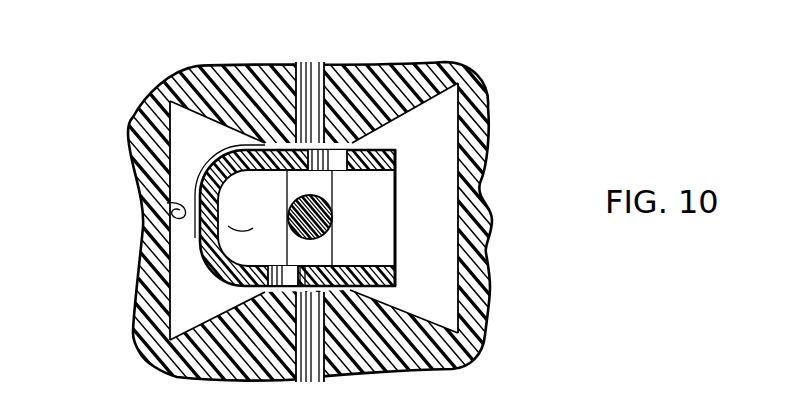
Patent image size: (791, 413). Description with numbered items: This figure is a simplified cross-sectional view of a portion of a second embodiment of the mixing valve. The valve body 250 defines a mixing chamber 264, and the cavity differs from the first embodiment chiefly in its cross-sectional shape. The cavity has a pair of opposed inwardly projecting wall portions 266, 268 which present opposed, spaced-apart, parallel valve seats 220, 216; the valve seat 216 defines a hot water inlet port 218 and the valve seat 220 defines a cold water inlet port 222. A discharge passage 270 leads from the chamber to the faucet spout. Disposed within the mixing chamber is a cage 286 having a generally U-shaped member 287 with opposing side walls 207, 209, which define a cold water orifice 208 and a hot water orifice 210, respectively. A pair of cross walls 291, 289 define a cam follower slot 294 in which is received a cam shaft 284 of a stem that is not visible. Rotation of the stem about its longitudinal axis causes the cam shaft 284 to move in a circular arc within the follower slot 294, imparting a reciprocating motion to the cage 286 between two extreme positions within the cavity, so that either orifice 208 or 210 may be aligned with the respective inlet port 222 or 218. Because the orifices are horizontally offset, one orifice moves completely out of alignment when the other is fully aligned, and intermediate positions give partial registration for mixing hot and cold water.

The valve body 250 is at (405, 60).
The mixing chamber 264 is at (452, 114).
The inwardly projecting wall portion 266 is at (372, 124).
The inwardly projecting wall portion 268 is at (398, 318).
The cold water inlet port 222 is at (294, 118).
The hot water inlet port 218 is at (294, 314).
The U-shaped member 287 is at (195, 172).
The valve seat 220 is at (263, 145).
The cold water orifice 208 is at (322, 170).
The hot water orifice 210 is at (310, 270).
The side wall 207 is at (380, 160).
The side wall 209 is at (380, 292).
The valve seat 216 is at (263, 288).
The cam follower slot 294 is at (396, 190).
The cross wall 289 is at (380, 237).
The cross wall 291 is at (200, 222).
The cam shaft 284 is at (335, 238).
The discharge passage 270 is at (167, 203).
The cage 286 is at (188, 264).